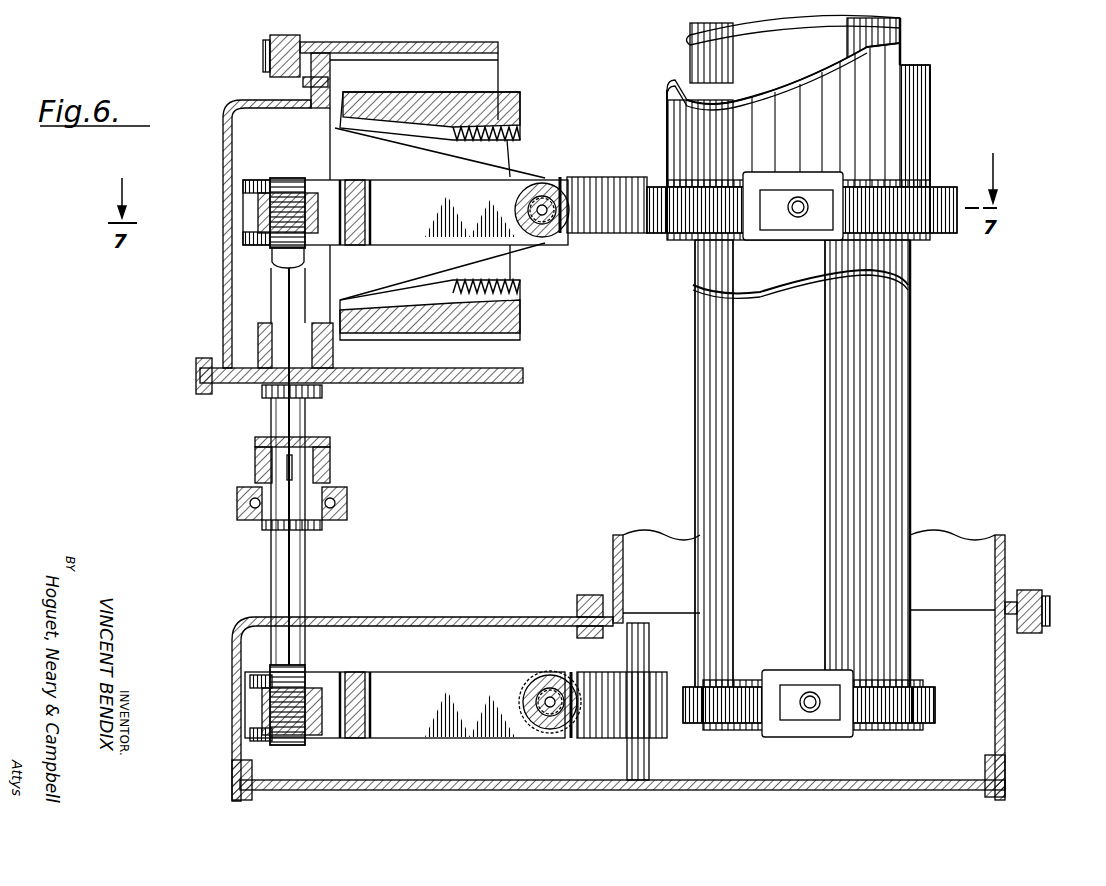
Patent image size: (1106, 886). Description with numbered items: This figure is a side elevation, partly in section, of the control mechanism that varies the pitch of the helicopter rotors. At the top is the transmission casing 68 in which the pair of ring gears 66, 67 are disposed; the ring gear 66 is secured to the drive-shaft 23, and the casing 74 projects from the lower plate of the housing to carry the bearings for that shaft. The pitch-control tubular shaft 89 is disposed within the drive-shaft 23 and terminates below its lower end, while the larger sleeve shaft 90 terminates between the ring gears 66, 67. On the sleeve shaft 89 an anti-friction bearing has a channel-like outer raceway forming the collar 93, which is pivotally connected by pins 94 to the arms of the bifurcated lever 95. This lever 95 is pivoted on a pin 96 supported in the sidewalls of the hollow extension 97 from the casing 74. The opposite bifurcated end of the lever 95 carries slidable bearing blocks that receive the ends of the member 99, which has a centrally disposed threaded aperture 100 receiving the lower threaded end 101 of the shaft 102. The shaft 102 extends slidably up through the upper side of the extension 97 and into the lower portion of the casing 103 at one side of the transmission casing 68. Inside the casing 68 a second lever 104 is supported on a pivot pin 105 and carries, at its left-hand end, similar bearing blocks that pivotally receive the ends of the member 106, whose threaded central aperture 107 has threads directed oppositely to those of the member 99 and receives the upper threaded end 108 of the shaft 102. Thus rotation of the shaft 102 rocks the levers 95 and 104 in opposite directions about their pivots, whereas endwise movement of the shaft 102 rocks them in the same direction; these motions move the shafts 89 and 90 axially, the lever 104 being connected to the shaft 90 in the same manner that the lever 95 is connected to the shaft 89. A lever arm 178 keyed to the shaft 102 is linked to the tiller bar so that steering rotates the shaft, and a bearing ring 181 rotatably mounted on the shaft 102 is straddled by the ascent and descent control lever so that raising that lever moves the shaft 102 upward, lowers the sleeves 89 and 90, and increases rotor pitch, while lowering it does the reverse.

The drive-shaft 23 is at (903, 50).
The ring gear 66 is at (455, 325).
The ring gear 67 is at (400, 105).
The transmission casing 68 is at (266, 53).
The casing 74 is at (1005, 668).
The tubular shaft 89 is at (702, 48).
The sleeve shaft 90 is at (917, 122).
The collar 93 is at (935, 700).
The pins 94 is at (810, 715).
The bifurcated lever 95 is at (627, 717).
The pin 96 is at (553, 677).
The hollow extension 97 is at (447, 643).
The member 99 is at (327, 720).
The threaded aperture 100 is at (315, 682).
The lower threaded end 101 is at (277, 675).
The shaft 102 is at (272, 543).
The casing 103 is at (416, 383).
The lever 104 is at (613, 217).
The pivot pin 105 is at (543, 200).
The member 106 is at (260, 205).
The threaded central aperture 107 is at (278, 168).
The upper threaded end 108 is at (262, 230).
The lever arm 178 is at (328, 455).
The bearing ring 181 is at (347, 493).